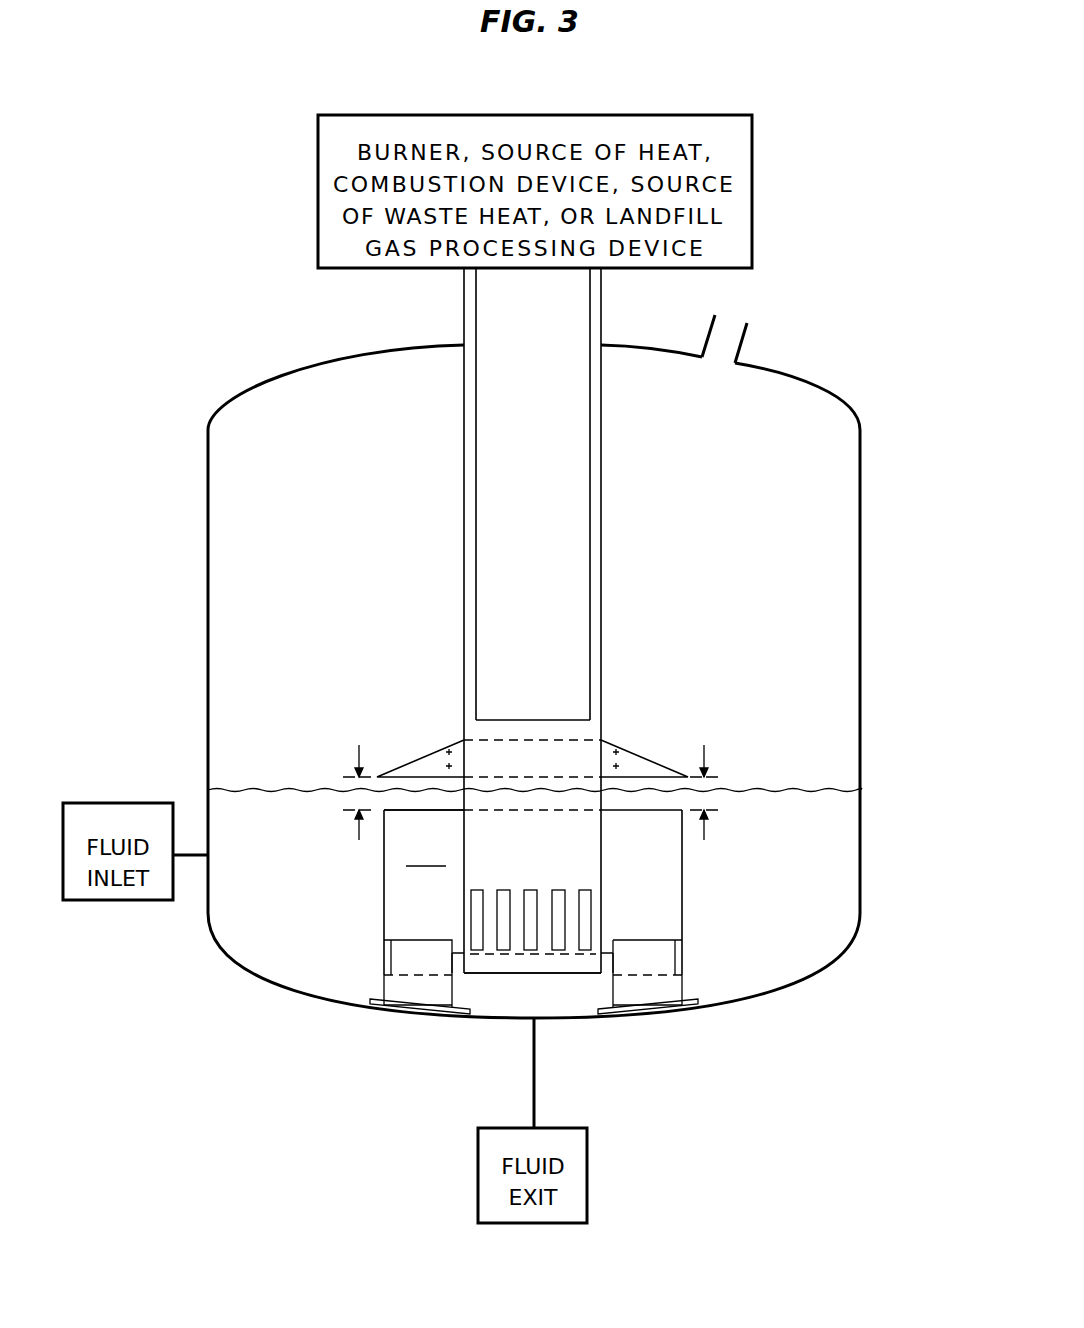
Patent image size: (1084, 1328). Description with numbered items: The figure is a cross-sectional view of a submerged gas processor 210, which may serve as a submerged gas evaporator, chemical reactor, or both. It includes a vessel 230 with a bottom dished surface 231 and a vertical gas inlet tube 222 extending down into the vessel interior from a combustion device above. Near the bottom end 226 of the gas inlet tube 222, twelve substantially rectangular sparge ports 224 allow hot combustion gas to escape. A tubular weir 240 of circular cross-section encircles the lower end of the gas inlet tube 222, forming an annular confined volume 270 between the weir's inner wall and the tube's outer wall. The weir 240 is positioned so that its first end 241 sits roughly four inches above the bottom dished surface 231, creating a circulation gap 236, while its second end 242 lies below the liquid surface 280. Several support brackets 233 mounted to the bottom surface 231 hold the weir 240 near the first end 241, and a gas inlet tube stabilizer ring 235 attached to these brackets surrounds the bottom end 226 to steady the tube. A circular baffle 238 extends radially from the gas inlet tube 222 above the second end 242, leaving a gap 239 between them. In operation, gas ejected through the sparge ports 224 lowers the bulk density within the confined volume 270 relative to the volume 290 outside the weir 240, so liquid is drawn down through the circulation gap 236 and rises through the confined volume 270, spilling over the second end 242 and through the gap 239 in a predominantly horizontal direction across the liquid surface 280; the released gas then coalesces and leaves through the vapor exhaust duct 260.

The submerged gas processor 210 is at (573, 666).
The gas inlet tube 222 is at (602, 550).
The sparge ports 224 is at (585, 912).
The bottom end of the gas inlet tube 226 is at (568, 977).
The vessel 230 is at (862, 622).
The bottom dished surface 231 is at (718, 1003).
The support brackets 233 is at (453, 978).
The gas inlet tube stabilizer ring 235 is at (474, 983).
The circulation gap 236 is at (683, 985).
The baffle 238 is at (662, 755).
The gap 239 is at (343, 785).
The weir 240 is at (660, 892).
The first end of the weir 241 is at (680, 975).
The second end of the weir 242 is at (685, 812).
The vapor exhaust duct 260 is at (730, 322).
The confined volume 270 is at (429, 855).
The liquid surface 280 is at (832, 792).
The volume outside the weir 290 is at (316, 942).